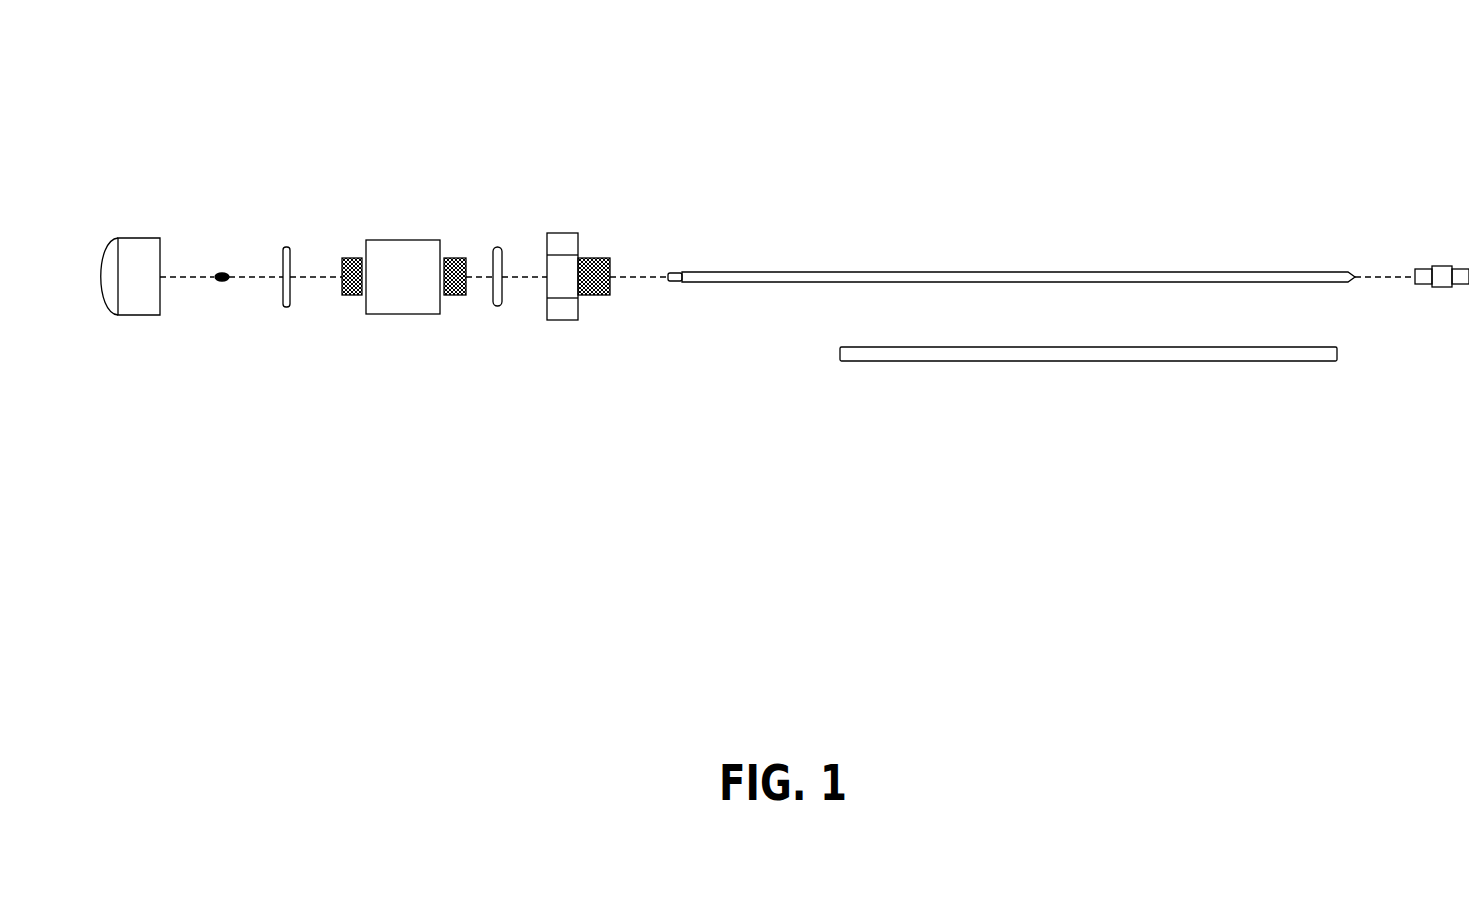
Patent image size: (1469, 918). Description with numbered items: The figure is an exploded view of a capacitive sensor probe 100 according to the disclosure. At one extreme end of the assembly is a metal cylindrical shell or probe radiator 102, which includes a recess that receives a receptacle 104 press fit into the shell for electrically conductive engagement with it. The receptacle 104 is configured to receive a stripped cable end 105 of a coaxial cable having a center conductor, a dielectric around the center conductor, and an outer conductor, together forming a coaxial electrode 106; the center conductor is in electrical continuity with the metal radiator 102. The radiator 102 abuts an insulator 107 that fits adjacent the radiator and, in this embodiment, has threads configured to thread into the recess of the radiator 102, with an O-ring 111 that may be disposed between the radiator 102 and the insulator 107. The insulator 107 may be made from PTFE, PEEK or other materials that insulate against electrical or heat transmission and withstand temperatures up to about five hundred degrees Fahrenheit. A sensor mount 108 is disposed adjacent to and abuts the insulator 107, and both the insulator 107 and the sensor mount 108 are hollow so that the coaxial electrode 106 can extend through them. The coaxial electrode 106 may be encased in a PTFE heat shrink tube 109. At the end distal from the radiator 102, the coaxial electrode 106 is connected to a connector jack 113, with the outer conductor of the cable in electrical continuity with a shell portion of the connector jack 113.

The optical system 100 is at (798, 128).
The probe radiator 102 is at (145, 230).
The receptacle 104 is at (226, 266).
The O-ring 111 is at (298, 241).
The insulator 107 is at (398, 240).
The sensor mount 108 is at (573, 226).
The stripped cable end 105 is at (666, 292).
The coaxial electrode 106 is at (735, 263).
The PTFE heat shrink tube 109 is at (892, 369).
The connector jack 113 is at (1432, 259).